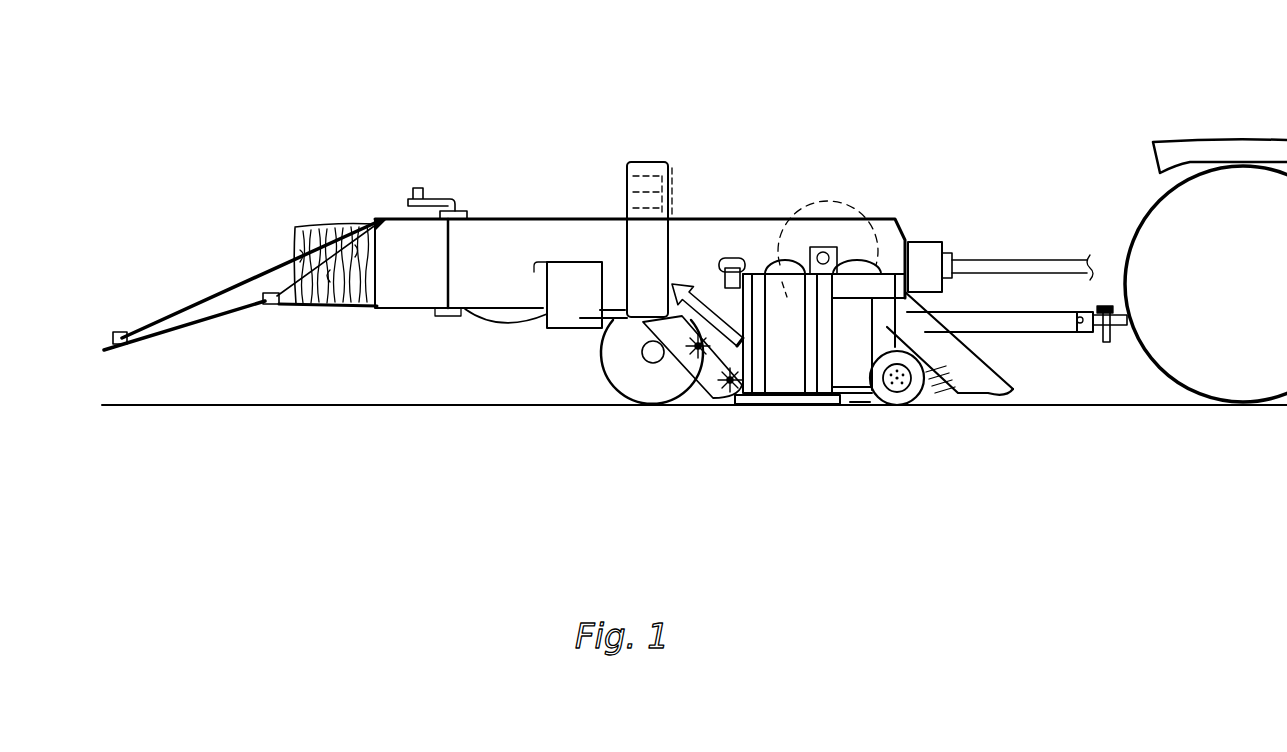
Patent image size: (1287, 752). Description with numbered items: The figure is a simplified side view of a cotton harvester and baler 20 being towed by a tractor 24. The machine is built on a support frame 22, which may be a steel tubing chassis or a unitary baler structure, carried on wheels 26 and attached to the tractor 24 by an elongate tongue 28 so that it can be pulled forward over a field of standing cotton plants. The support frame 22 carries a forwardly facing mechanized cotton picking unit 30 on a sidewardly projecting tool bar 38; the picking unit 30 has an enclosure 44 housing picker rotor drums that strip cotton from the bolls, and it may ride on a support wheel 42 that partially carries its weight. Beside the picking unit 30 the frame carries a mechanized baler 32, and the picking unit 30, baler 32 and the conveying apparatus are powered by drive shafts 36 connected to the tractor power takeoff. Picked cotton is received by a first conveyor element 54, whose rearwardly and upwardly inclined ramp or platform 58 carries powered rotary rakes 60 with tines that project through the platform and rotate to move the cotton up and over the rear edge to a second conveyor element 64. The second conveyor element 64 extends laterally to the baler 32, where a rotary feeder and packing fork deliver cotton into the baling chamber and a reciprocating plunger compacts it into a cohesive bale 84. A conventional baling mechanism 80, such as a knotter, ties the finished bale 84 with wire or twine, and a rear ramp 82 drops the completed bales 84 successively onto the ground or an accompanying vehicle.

The cotton harvester and baler 20 is at (913, 92).
The support frame 22 is at (982, 333).
The tractor 24 is at (1233, 128).
The wheels 26 is at (600, 352).
The elongate tongue 28 is at (1077, 334).
The mechanized cotton picking unit 30 is at (855, 402).
The mechanized baler 32 is at (698, 215).
The drive shafts 36 is at (826, 247).
The tool bar 38 is at (735, 258).
The support wheels 42 is at (930, 402).
The enclosure 44 is at (907, 237).
The first conveyor element 54 is at (702, 392).
The ramp or platform 58 is at (690, 284).
The powered rotary rakes 60 is at (683, 358).
The second conveyor element 64 is at (650, 160).
The baling mechanism 80 is at (467, 212).
The rear ramp 82 is at (212, 318).
The bale 84 is at (317, 226).